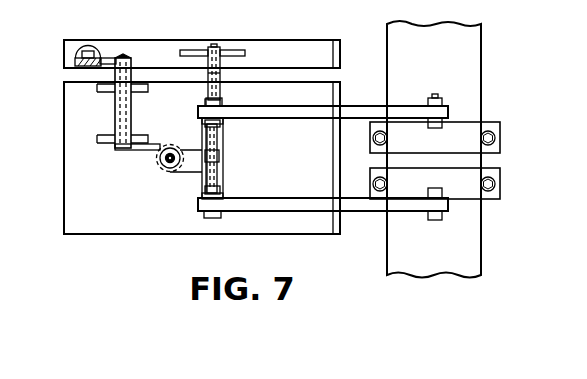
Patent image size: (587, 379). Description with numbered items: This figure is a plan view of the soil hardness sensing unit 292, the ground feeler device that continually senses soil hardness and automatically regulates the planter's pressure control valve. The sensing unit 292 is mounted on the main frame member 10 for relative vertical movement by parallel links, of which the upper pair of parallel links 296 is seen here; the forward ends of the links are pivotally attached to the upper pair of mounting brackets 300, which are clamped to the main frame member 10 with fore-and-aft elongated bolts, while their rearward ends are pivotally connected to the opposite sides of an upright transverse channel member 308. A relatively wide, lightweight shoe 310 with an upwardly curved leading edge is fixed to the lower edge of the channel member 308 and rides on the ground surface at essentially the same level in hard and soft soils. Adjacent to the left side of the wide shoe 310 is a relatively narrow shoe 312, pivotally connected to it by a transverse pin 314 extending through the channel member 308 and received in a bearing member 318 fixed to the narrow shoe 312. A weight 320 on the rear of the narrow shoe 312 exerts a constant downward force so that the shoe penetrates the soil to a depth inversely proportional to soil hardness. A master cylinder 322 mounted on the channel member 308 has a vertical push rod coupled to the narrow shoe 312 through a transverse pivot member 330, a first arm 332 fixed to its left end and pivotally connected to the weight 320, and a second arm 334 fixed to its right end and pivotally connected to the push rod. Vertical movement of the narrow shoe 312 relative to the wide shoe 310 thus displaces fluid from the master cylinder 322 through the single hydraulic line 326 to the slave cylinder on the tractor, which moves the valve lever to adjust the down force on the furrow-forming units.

The main frame member 10 is at (480, 53).
The soil hardness sensing unit 292 is at (280, 150).
The upper pair of parallel links 296 is at (293, 198).
The upper pair of mounting brackets 300 is at (502, 172).
The upright transverse channel member 308 is at (201, 188).
The wide shoe 310 is at (142, 234).
The narrow shoe 312 is at (153, 47).
The transverse pin 314 is at (213, 44).
The bearing member 318 is at (222, 53).
The weight 320 is at (85, 45).
The master cylinder 322 is at (190, 148).
The hydraulic line 326 is at (166, 167).
The transverse pivot member 330 is at (115, 110).
The first arm 332 is at (108, 58).
The second arm 334 is at (143, 150).